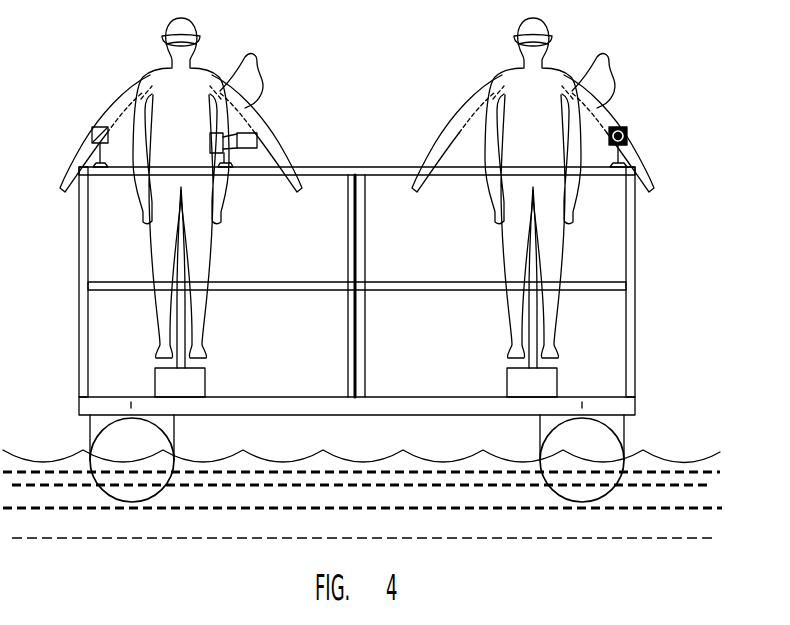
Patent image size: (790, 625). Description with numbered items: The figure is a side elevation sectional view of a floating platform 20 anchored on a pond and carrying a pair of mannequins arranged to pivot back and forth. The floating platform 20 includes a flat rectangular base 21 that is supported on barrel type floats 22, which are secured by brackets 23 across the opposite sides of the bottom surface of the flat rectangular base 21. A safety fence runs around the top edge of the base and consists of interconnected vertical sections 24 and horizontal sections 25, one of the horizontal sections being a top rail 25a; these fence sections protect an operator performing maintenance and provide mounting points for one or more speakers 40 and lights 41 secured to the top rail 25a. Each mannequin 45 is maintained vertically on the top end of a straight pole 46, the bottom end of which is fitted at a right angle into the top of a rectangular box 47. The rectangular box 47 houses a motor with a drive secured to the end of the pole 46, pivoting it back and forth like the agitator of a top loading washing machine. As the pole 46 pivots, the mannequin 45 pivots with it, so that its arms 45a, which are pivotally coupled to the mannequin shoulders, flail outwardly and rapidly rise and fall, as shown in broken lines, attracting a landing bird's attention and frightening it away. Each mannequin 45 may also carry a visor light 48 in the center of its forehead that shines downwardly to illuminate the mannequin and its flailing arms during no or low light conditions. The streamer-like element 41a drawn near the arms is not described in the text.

The floating platform 20 is at (672, 158).
The flat rectangular base 21 is at (380, 403).
The barrel type floats 22 is at (93, 440).
The brackets 23 is at (89, 421).
The vertical sections 24 is at (78, 236).
The horizontal sections 25 is at (578, 290).
The top rail 25a is at (325, 167).
The speakers 40 is at (247, 157).
The lights 41 is at (92, 135).
The attachment streamer 41a is at (253, 55).
The mannequin 45 is at (157, 98).
The mannequin arms 45a is at (105, 105).
The straight pole 46 is at (177, 305).
The rectangular box 47 is at (155, 375).
The visor light 48 is at (163, 40).